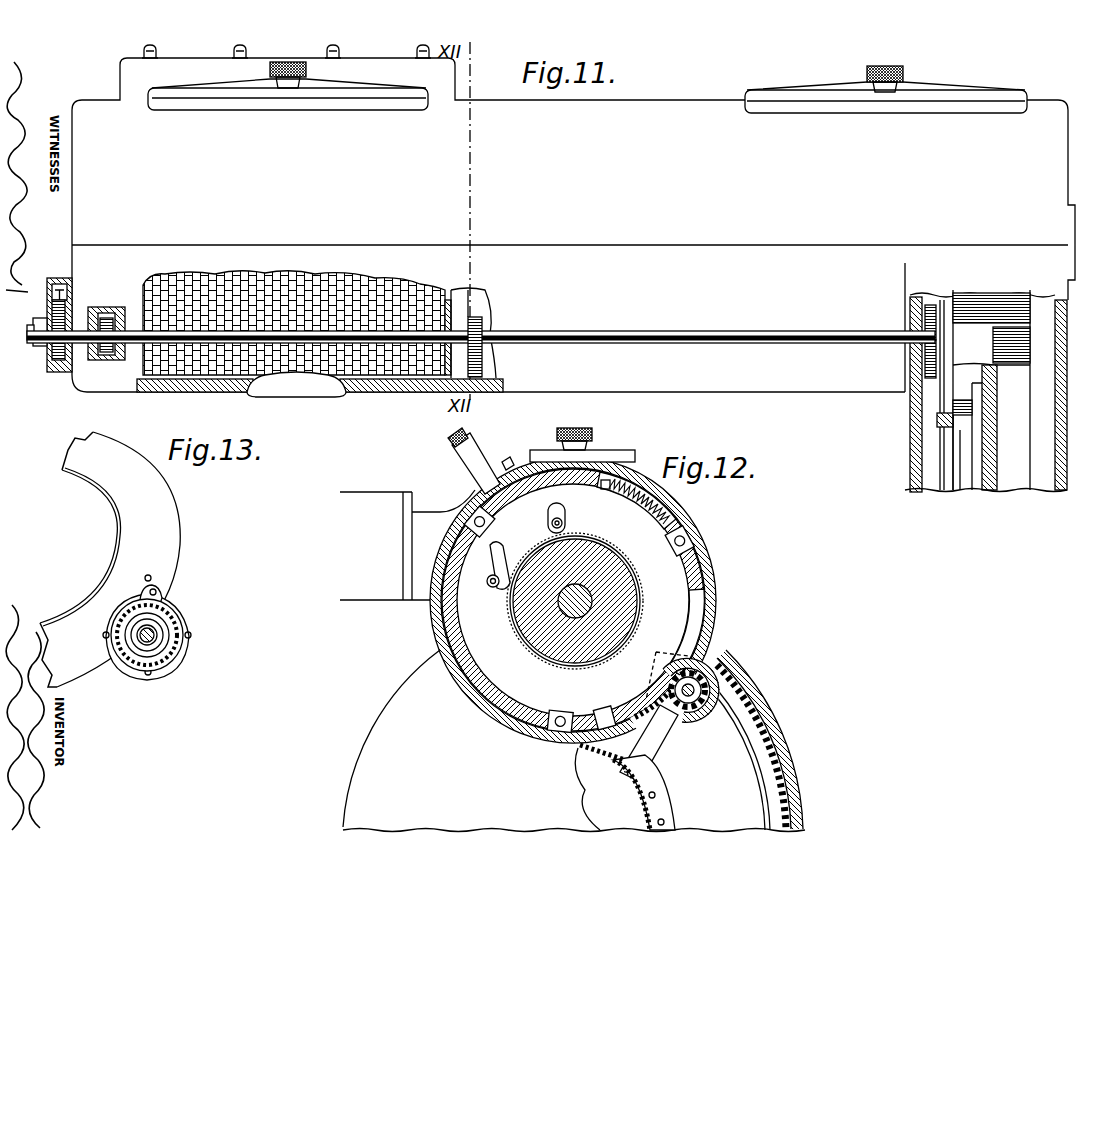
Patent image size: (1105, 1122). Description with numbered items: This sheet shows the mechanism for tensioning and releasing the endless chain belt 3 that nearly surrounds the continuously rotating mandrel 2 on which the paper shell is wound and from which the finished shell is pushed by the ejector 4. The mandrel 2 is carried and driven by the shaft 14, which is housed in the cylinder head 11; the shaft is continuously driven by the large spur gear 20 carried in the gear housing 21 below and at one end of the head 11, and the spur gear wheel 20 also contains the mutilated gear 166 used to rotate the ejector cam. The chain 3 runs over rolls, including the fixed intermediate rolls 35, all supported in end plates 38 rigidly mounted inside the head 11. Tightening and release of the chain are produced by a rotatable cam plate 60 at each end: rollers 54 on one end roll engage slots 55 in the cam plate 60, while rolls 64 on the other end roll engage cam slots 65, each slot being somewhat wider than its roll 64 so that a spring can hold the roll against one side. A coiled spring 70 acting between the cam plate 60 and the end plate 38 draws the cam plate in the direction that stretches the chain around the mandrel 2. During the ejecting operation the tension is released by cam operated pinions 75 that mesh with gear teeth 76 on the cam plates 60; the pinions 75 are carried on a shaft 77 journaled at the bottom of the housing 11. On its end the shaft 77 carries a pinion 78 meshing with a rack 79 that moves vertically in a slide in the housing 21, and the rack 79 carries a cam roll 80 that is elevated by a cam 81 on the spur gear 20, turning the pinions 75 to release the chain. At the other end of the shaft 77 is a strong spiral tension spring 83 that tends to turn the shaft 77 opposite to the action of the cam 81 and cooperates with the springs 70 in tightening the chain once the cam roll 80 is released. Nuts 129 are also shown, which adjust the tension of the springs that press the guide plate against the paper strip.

In FIG. 12, the mandrel 2 is at (620, 612).
In FIG. 11, the endless chain belt 3 is at (303, 300).
In FIG. 12, the ejector 4 is at (640, 590).
In FIG. 11, the cylinder housing or head 11 is at (573, 218).
In FIG. 12, the cylinder housing or head 11 is at (716, 585).
In FIG. 13, the cylinder housing or head 11 is at (165, 510).
In FIG. 12, the shaft 14 is at (573, 618).
In FIG. 11, the spur gear 20 is at (1010, 312).
In FIG. 12, the spur gear 20 is at (796, 772).
In FIG. 11, the gear housing 21 is at (910, 426).
In FIG. 12, the gear housing 21 is at (776, 734).
In FIG. 11, the intermediate rolls 35 is at (432, 375).
In FIG. 11, the end plates 38 is at (470, 300).
In FIG. 12, the end plates 38 is at (700, 548).
In FIG. 12, the rollers 54 is at (564, 522).
In FIG. 12, the slots 55 is at (560, 510).
In FIG. 12, the cam plate 60 is at (574, 741).
In FIG. 12, the rolls 64 is at (495, 590).
In FIG. 12, the cam slots 65 is at (492, 582).
In FIG. 12, the coiled spring 70 is at (632, 500).
In FIG. 11, the cam operated pinions 75 is at (106, 318).
In FIG. 12, the cam operated pinions 75 is at (708, 672).
In FIG. 12, the gear teeth 76 is at (662, 720).
In FIG. 11, the shaft 77 is at (574, 333).
In FIG. 12, the shaft 77 is at (700, 690).
In FIG. 13, the shaft 77 is at (160, 640).
In FIG. 11, the pinion 78 is at (924, 318).
In FIG. 11, the rack 79 is at (924, 364).
In FIG. 12, the rack 79 is at (646, 688).
In FIG. 11, the cam roll 80 is at (945, 428).
In FIG. 12, the cam roll 80 is at (642, 767).
In FIG. 11, the cam 81 is at (948, 478).
In FIG. 12, the cam 81 is at (662, 808).
In FIG. 13, the tension spring 83 is at (160, 628).
In FIG. 12, the nuts 129 is at (452, 441).
In FIG. 11, the mutilated gear 166 is at (968, 296).